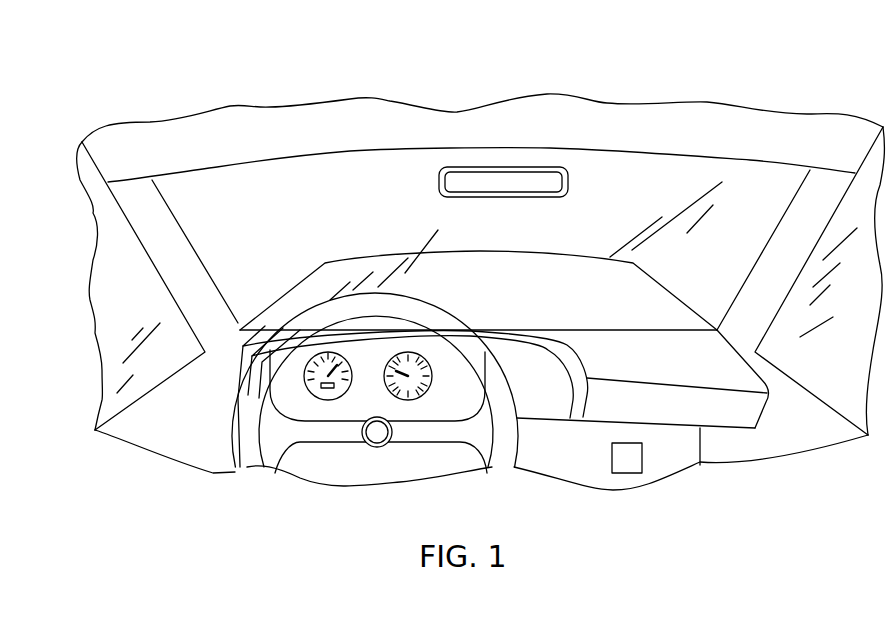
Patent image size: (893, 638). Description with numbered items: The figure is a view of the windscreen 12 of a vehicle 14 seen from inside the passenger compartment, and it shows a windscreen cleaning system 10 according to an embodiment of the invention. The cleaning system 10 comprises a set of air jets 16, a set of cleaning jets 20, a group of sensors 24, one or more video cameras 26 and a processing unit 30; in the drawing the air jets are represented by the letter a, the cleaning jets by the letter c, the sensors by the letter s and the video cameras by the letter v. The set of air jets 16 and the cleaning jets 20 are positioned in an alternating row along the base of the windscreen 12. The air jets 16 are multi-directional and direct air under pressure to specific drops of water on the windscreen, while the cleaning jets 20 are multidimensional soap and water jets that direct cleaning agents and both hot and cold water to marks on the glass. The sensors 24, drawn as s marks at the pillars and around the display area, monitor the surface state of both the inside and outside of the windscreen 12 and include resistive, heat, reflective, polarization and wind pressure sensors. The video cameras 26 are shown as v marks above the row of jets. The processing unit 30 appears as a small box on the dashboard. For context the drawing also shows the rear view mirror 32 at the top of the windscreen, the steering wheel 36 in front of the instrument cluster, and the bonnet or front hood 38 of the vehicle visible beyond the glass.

The windscreen cleaning system 10 is at (712, 48).
The windscreen 12 is at (627, 163).
The vehicle 14 is at (114, 310).
The set of air jets 16 is at (240, 330).
The set of cleaning jets 20 is at (297, 305).
The group of sensors 24 is at (191, 193).
The video cameras 26 is at (545, 290).
The processing unit 30 is at (642, 462).
The rear view mirror 32 is at (568, 183).
The steering wheel 36 is at (503, 468).
The bonnet or front hood 38 is at (375, 254).